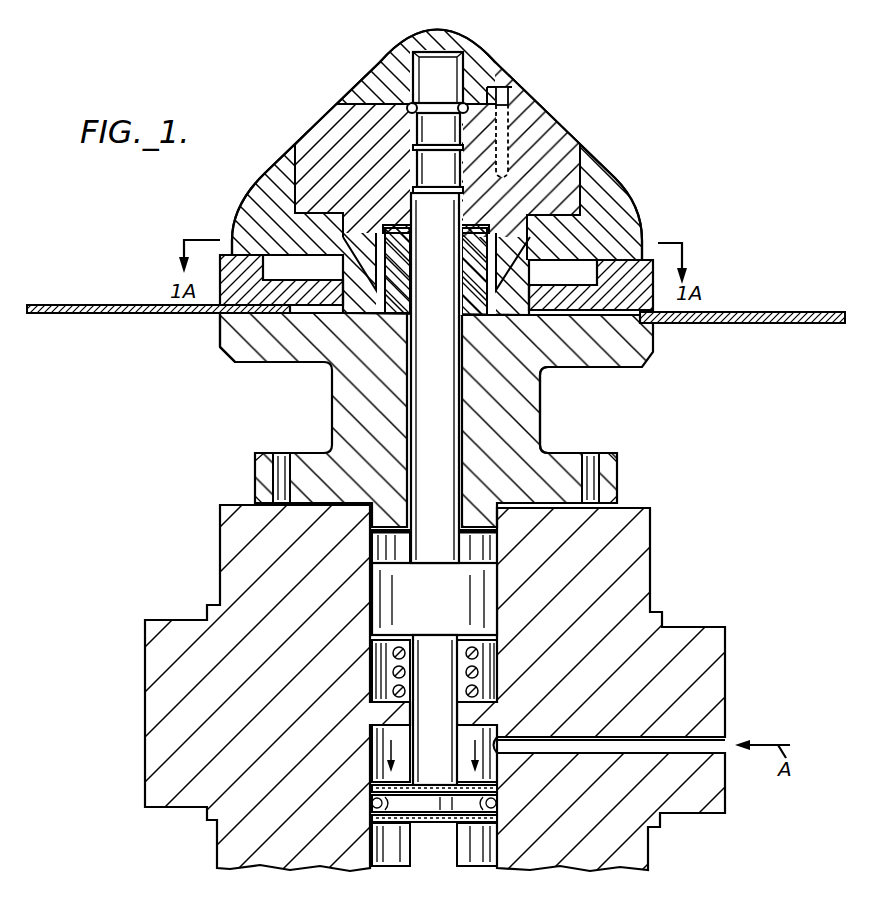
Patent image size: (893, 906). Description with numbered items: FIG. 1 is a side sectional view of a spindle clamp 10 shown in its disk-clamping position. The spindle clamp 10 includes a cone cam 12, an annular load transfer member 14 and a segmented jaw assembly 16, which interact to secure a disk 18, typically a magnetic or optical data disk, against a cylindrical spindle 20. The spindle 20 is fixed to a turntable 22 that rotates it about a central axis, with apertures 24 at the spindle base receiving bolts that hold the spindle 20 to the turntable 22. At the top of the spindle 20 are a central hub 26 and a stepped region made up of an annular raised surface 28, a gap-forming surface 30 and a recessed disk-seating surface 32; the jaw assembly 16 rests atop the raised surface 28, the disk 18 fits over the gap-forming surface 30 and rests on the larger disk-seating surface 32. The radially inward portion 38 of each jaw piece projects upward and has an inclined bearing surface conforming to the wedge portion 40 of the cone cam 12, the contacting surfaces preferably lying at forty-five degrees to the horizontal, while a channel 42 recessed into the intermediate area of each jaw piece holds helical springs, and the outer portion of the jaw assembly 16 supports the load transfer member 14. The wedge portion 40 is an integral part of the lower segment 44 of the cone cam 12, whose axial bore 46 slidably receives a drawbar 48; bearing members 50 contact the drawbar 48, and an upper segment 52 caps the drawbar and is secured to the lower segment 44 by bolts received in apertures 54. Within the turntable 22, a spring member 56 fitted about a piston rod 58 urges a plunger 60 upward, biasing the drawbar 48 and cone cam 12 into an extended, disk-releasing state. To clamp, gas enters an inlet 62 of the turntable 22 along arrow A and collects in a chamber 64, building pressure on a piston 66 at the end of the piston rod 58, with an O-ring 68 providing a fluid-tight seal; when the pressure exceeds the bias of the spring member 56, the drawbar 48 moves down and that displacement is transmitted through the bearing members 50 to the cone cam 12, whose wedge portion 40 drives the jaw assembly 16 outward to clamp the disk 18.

The spindle clamp 10 is at (647, 79).
The cone cam 12 is at (328, 107).
The annular load transfer member 14 is at (273, 252).
The segmented jaw assembly 16 is at (230, 252).
The disk 18 is at (92, 318).
The cylindrical spindle 20 is at (338, 392).
The turntable 22 is at (230, 503).
The apertures 24 is at (282, 453).
The central hub 26 is at (543, 383).
The raised surface 28 is at (268, 362).
The gap-forming surface 30 is at (300, 300).
The disk-seating surface 32 is at (218, 324).
The radially inward portion 38 is at (365, 285).
The wedge portion 40 is at (375, 275).
The channel 42 is at (268, 253).
The lower segment 44 is at (555, 133).
The axial bore 46 is at (409, 104).
The drawbar 48 is at (421, 45).
The bearing members 50 is at (434, 72).
The upper segment 52 is at (480, 53).
The apertures 54 is at (507, 110).
The spring member 56 is at (497, 645).
The piston rod 58 is at (445, 640).
The plunger 60 is at (440, 610).
The inlet 62 is at (725, 737).
The chamber 64 is at (403, 773).
The piston 66 is at (440, 818).
The O-ring 68 is at (500, 866).